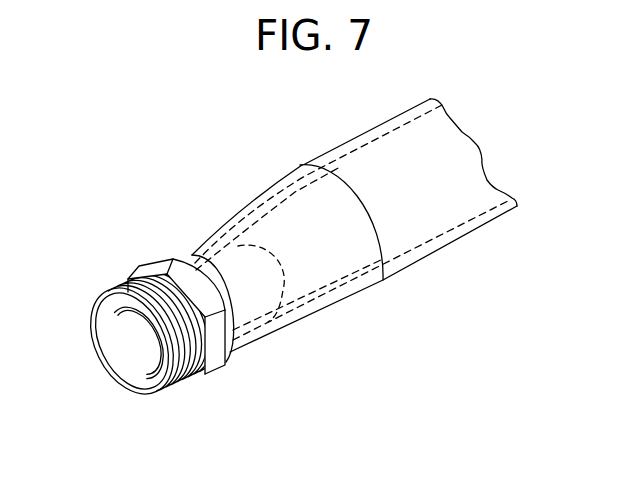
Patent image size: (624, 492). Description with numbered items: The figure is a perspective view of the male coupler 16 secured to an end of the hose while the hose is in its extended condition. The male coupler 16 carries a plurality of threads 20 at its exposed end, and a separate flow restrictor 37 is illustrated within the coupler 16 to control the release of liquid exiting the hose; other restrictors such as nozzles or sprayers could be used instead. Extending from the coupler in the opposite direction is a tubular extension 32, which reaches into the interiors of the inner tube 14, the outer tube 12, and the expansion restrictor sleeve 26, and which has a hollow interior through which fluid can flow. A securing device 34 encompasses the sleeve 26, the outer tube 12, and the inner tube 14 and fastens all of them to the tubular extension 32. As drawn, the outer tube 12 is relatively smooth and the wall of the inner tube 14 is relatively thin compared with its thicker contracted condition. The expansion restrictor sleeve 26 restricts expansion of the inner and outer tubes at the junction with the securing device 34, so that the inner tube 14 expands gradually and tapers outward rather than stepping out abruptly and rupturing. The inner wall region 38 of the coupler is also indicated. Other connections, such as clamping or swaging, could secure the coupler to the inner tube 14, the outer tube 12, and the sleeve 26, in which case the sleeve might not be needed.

The outer tube 12 is at (512, 207).
The inner tube 14 is at (442, 237).
The male coupler 16 is at (162, 271).
The threads 20 is at (118, 288).
The expansion restrictor sleeve 26 is at (268, 187).
The tubular extension 32 is at (283, 320).
The securing device 34 is at (192, 260).
The flow restrictor 37 is at (150, 353).
The inner wall 38 is at (147, 337).